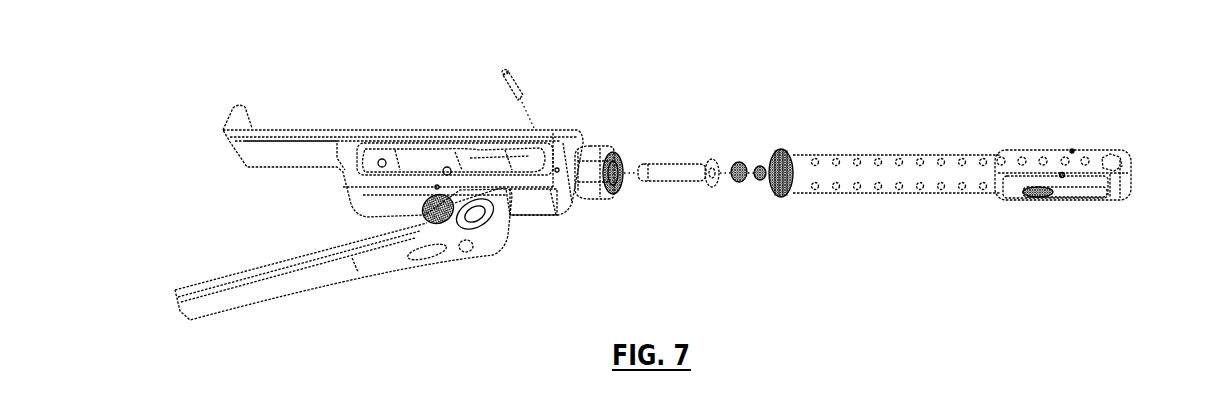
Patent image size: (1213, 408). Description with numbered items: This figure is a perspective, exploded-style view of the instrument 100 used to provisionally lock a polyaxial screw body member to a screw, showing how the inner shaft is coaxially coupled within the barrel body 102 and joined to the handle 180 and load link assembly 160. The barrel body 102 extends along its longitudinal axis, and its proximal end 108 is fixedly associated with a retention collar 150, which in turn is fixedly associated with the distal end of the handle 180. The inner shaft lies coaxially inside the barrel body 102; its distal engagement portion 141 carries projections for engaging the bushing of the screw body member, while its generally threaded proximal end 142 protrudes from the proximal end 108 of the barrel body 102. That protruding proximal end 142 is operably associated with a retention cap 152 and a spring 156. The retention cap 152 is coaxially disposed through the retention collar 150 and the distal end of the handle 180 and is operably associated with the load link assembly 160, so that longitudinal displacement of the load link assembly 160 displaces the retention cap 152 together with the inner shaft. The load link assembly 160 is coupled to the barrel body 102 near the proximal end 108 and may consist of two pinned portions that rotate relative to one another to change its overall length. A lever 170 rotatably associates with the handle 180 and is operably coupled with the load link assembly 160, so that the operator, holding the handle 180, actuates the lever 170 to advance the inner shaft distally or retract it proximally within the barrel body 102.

The instrument 100 is at (246, 61).
The barrel body 102 is at (903, 165).
The proximal end of the barrel body 108 is at (789, 184).
The distal engagement portion 141 is at (513, 82).
The threaded portion 142 is at (759, 180).
The retention collar 150 is at (594, 147).
The retention cap 152 is at (657, 172).
The spring 156 is at (740, 162).
The load link assembly 160 is at (412, 163).
The lever 170 is at (304, 277).
The handle 180 is at (458, 130).